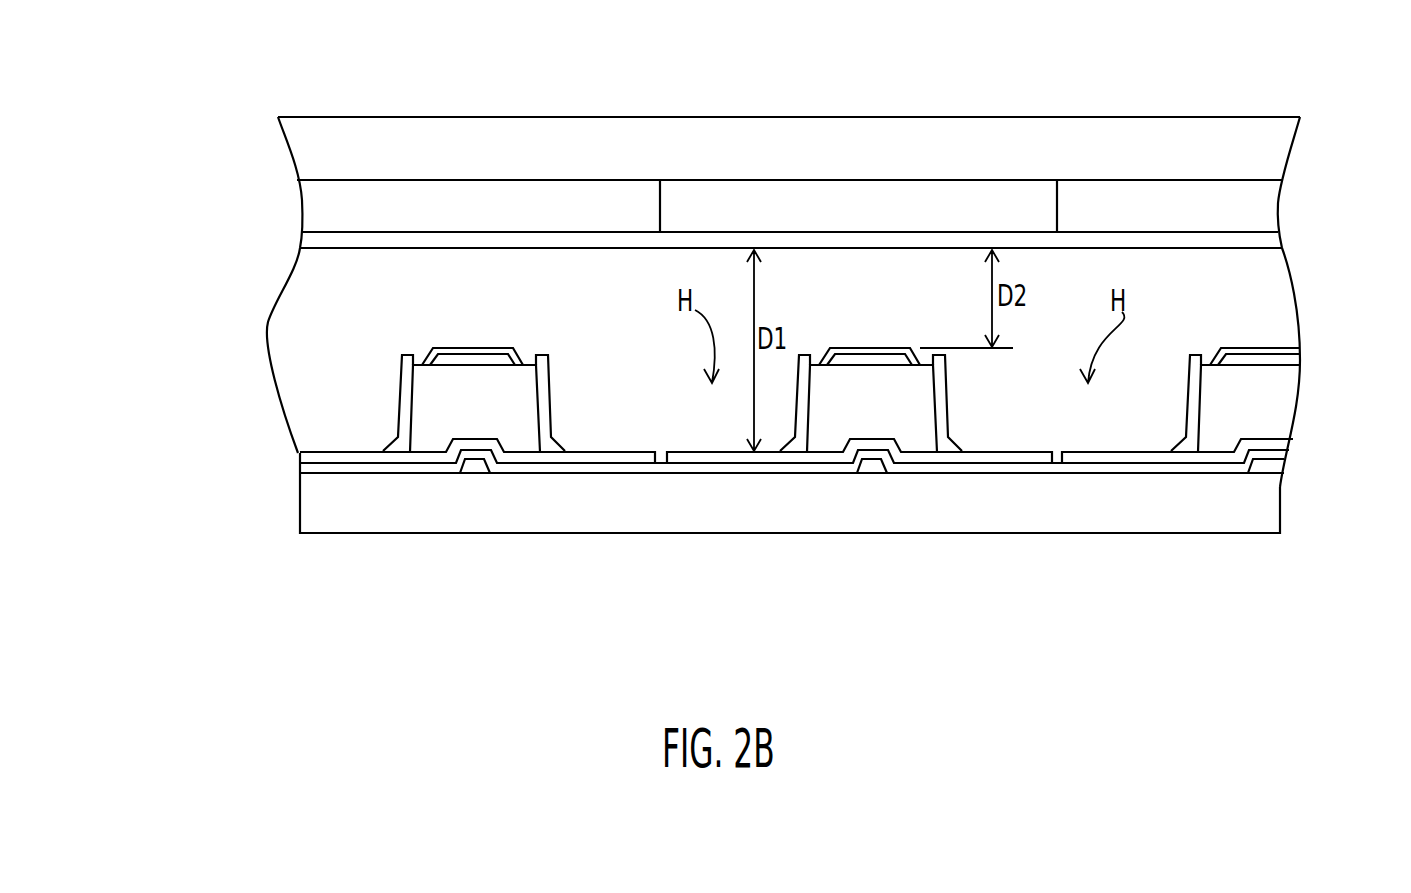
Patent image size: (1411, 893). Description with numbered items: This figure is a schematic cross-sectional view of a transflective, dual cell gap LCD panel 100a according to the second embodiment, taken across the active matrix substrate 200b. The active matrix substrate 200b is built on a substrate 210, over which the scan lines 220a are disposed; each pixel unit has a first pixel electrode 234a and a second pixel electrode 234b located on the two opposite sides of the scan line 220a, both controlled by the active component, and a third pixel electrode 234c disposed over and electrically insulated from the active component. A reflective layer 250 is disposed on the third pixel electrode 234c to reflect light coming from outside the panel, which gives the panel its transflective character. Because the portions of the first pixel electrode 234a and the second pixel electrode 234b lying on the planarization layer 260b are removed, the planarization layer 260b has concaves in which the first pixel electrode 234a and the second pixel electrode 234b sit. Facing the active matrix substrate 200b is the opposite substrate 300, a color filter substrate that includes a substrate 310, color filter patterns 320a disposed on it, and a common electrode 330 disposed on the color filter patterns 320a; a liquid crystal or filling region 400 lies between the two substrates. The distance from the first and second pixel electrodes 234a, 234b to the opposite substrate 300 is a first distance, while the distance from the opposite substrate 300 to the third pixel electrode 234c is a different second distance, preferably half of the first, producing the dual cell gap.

The display substrate 100a is at (1120, 605).
The active matrix substrate 200b is at (189, 465).
The substrate 210 is at (306, 505).
The scan line 220a is at (476, 463).
The first pixel electrode 234a is at (355, 465).
The second pixel electrode 234b is at (588, 455).
The third pixel electrode 234c is at (503, 360).
The reflective layer 250 is at (453, 348).
The planarization layer 260b is at (435, 380).
The opposite substrate 300 is at (188, 132).
The substrate 310 is at (290, 143).
The color filter pattern 320a is at (302, 208).
The common electrode 330 is at (302, 239).
The filler layer 400 is at (273, 325).